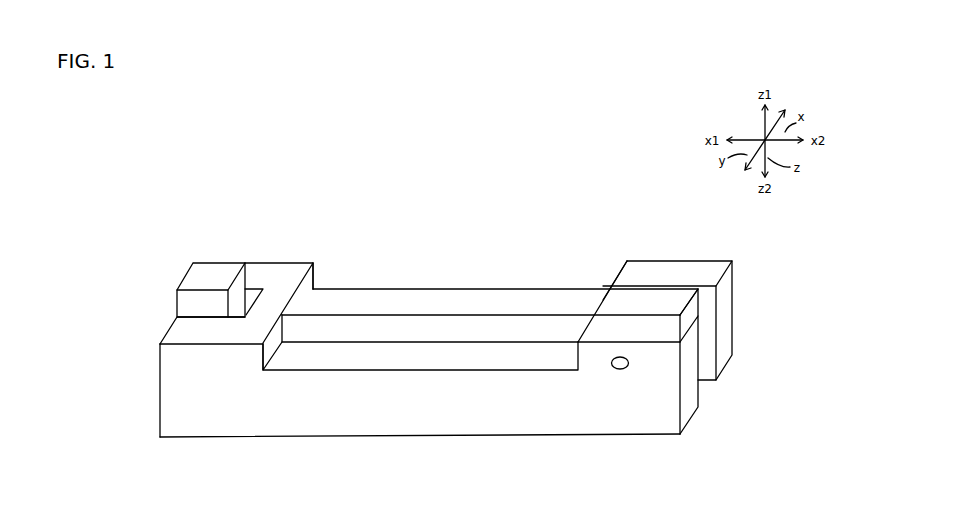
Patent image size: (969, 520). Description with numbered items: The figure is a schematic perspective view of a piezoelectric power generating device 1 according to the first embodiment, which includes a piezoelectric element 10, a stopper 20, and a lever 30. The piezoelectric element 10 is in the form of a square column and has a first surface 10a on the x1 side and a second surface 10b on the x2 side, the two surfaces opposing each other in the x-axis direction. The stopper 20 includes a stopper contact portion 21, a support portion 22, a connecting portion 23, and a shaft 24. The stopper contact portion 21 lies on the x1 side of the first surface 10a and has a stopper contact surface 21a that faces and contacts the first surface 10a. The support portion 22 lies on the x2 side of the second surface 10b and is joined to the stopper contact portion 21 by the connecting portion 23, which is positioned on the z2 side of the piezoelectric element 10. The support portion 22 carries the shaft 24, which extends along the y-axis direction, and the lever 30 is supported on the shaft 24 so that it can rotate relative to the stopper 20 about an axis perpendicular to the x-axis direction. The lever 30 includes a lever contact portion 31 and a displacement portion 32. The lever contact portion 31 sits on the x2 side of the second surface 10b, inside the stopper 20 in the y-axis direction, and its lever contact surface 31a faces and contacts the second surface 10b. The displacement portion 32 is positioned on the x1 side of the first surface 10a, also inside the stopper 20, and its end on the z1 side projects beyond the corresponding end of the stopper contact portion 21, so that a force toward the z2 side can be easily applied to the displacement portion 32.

The piezoelectric power generating device 1 is at (627, 187).
The piezoelectric element 10 is at (480, 287).
The first surface 10a is at (290, 300).
The second surface 10b is at (605, 297).
The stopper 20 is at (505, 437).
The stopper contact portion 21 is at (262, 263).
The stopper contact surface 21a is at (314, 280).
The support portion 22 is at (733, 330).
The connecting portion 23 is at (392, 437).
The shaft 24 is at (628, 370).
The lever 30 is at (175, 302).
The lever contact portion 31 is at (700, 302).
The lever contact surface 31a is at (600, 302).
The displacement portion 32 is at (217, 263).